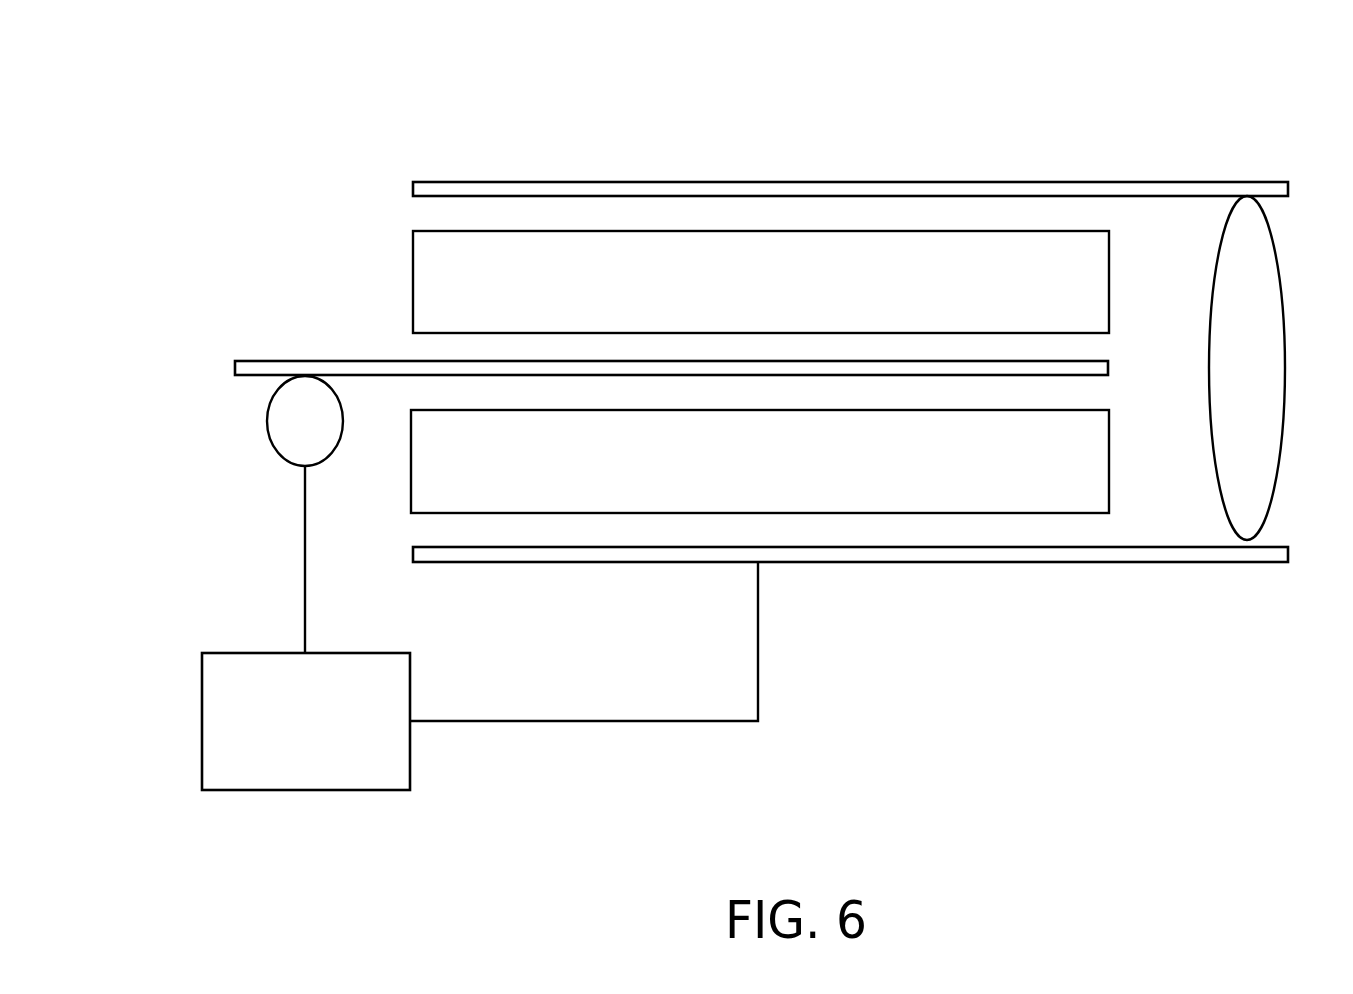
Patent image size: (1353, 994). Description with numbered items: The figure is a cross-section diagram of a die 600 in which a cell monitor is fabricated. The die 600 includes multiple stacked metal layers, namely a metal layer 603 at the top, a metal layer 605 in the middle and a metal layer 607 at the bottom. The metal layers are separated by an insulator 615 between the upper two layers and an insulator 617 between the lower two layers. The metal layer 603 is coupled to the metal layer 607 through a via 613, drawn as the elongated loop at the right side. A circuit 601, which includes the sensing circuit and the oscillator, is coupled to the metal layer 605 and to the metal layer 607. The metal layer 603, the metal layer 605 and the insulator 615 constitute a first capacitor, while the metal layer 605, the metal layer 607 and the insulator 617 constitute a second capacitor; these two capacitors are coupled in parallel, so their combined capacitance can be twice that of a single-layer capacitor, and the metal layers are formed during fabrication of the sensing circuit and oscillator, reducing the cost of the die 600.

The die 600 is at (226, 128).
The circuit 601 is at (202, 680).
The metal layer 603 is at (518, 182).
The metal layer 605 is at (348, 361).
The metal layer 607 is at (1004, 562).
The via 613 is at (1285, 331).
The insulator 615 is at (1111, 271).
The insulator 617 is at (1111, 439).